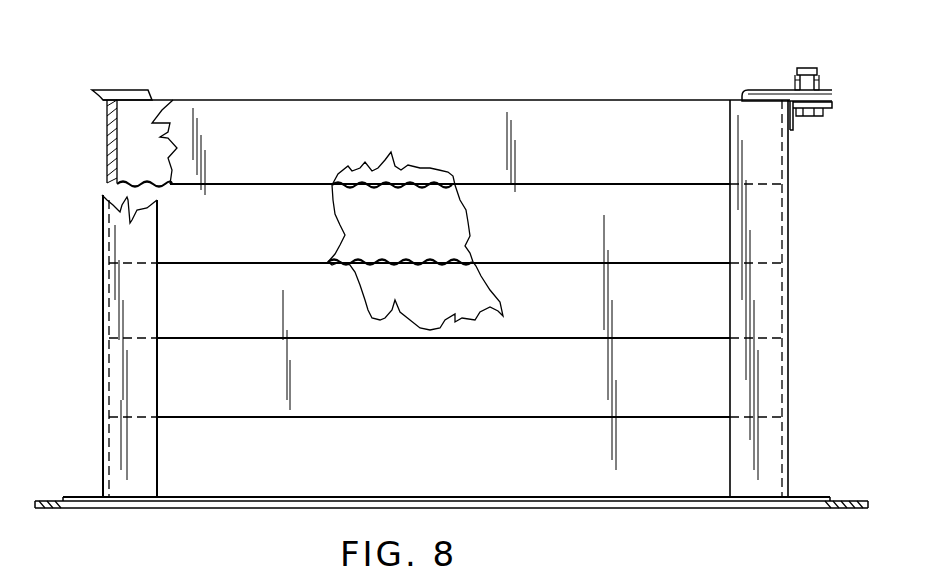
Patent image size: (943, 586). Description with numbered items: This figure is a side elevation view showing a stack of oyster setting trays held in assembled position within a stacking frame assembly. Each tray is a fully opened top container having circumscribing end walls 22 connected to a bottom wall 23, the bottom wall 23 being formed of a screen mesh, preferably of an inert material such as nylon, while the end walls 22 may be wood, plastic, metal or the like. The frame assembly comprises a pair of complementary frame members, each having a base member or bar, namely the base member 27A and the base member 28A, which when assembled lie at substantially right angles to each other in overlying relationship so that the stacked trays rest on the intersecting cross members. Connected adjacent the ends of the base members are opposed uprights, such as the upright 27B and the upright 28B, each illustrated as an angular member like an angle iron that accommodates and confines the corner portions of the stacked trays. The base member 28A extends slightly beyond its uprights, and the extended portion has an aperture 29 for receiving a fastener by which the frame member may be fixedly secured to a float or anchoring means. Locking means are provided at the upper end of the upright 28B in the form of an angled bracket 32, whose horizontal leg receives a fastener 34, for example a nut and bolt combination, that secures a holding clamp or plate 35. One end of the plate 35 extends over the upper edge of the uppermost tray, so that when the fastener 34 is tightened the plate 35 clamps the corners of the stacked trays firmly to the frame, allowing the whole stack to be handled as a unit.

The circumscribing end walls 22 is at (600, 154).
The bottom wall 23 is at (375, 182).
The base member 27A is at (380, 497).
The upright 27B is at (158, 448).
The base member 28A is at (598, 510).
The upright 28B is at (728, 444).
The aperture 29 is at (50, 504).
The angled bracket 32 is at (823, 112).
The fastener 34 is at (808, 67).
The holding clamp or plate 35 is at (778, 90).